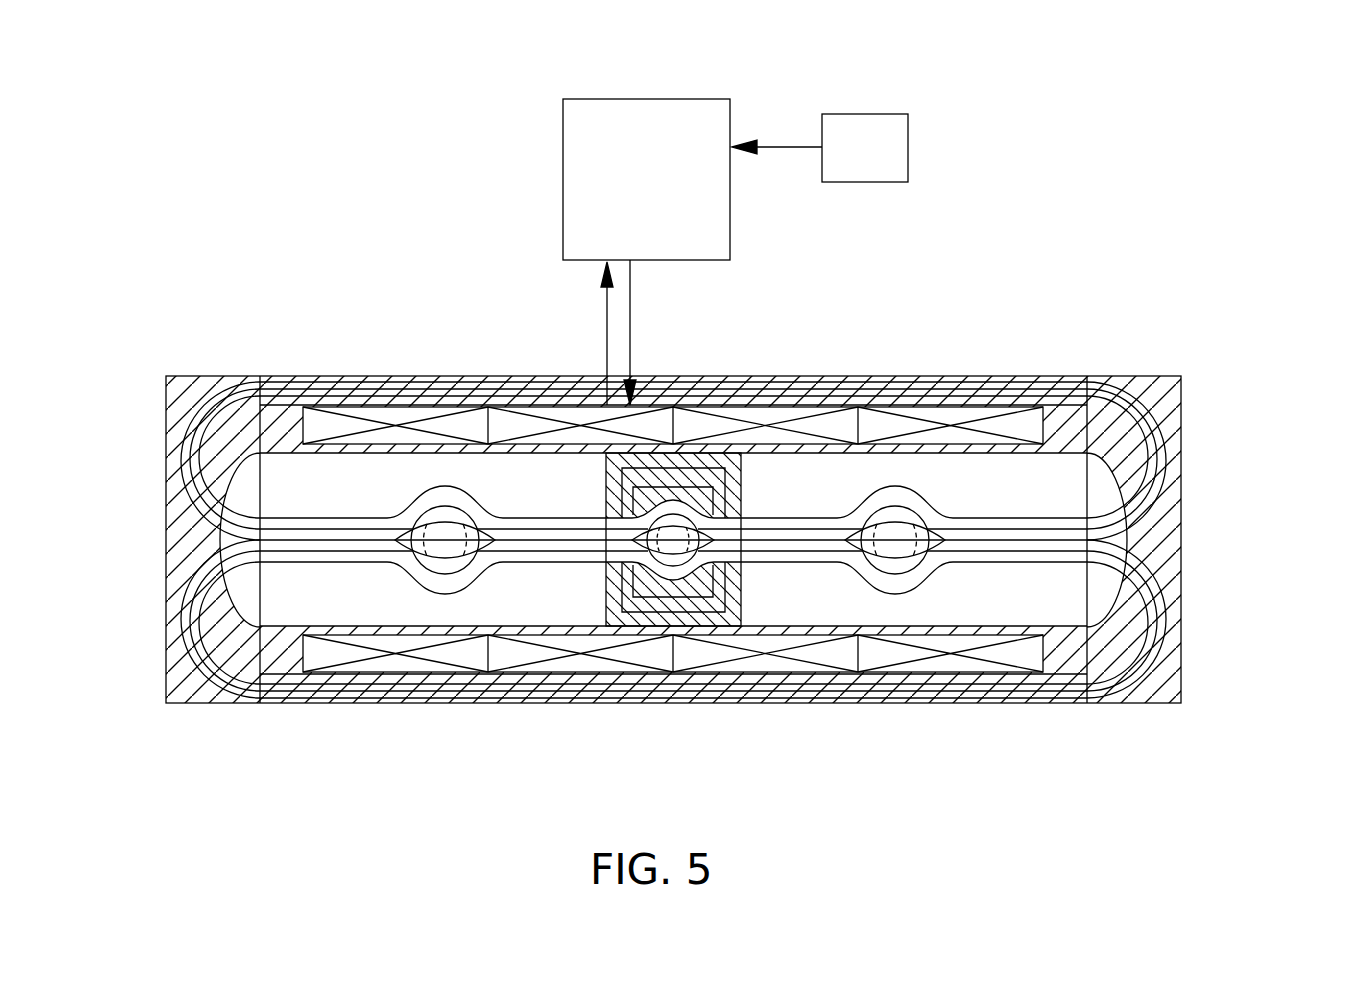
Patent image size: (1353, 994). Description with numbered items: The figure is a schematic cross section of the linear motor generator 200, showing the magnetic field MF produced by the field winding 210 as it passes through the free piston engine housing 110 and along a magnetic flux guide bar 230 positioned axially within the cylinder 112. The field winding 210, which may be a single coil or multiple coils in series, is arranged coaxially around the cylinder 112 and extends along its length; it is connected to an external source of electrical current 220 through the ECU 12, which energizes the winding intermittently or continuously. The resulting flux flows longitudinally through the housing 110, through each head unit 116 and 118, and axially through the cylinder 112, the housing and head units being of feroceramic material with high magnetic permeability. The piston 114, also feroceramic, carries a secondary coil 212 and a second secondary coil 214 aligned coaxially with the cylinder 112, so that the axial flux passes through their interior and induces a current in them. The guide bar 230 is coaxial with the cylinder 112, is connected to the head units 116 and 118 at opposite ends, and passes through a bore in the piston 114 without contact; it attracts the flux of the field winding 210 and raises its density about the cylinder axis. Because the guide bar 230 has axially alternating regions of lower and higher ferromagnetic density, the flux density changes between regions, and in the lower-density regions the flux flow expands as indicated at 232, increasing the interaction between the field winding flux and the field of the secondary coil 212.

The ECU 12 is at (637, 118).
The external source of electrical current 220 is at (855, 137).
The linear motor generator 200 is at (1001, 193).
The magnetic field MF is at (193, 407).
The cylinder 112 is at (393, 443).
The field winding 210 is at (540, 655).
The piston 114 is at (612, 455).
The secondary coil 212 is at (735, 478).
The second secondary coil 214 is at (690, 478).
The head unit 116 is at (173, 527).
The head unit 118 is at (1182, 532).
The magnetic flux guide bar 230 is at (310, 562).
The expansion of the flux flow 232 is at (443, 600).
The free piston engine housing 110 is at (965, 705).